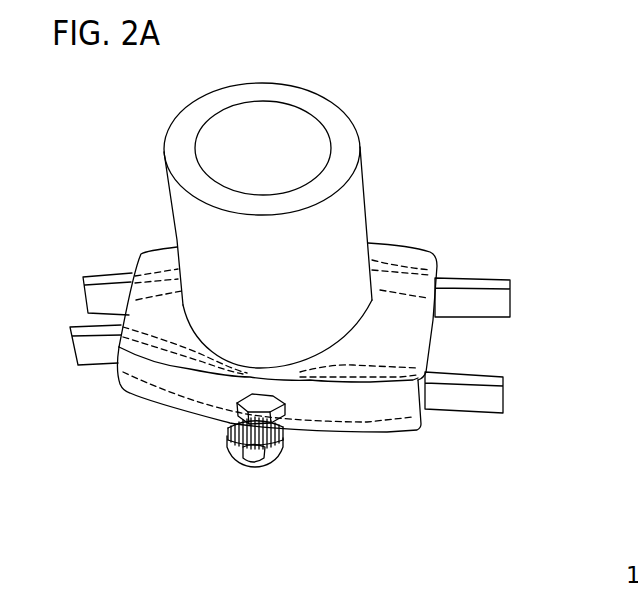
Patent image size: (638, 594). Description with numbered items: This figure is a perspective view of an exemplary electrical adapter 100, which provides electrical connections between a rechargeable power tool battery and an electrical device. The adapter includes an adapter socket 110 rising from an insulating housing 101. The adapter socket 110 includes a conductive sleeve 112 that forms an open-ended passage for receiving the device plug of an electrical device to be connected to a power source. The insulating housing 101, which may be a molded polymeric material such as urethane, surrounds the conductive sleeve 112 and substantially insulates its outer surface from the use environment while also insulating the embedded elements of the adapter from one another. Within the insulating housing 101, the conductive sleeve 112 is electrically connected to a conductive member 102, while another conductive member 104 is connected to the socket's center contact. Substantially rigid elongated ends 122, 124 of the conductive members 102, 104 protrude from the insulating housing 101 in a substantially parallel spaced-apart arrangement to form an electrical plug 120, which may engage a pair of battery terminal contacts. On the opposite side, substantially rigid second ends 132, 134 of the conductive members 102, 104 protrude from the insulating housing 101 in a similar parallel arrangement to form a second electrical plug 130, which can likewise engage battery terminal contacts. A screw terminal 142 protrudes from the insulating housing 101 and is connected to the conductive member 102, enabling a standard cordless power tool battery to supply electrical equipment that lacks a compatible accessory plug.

The electrical adapter 100 is at (497, 94).
The insulating housing 101 is at (238, 262).
The conductive member 102 is at (185, 378).
The conductive member 104 is at (150, 282).
The adapter socket 110 is at (226, 78).
The conductive sleeve 112 is at (287, 142).
The electrical plug 120 is at (483, 437).
The elongated end 122 is at (487, 397).
The elongated end 124 is at (480, 295).
The electrical plug 130 is at (77, 409).
The second end 132 is at (82, 348).
The second end 134 is at (97, 300).
The screw terminal 142 is at (252, 452).